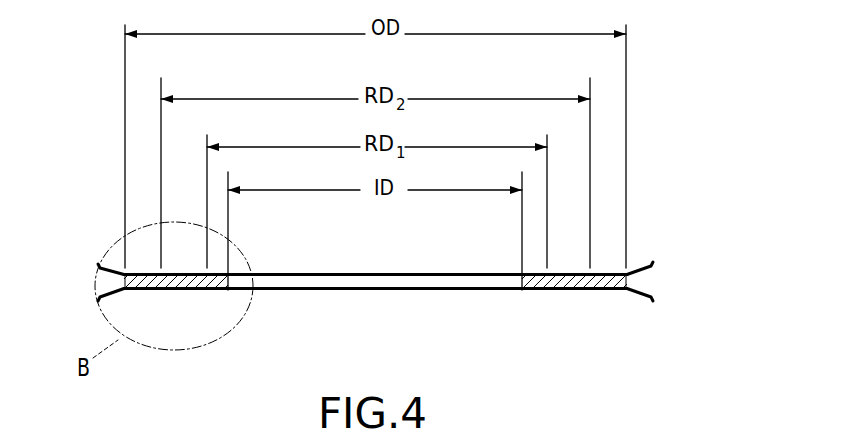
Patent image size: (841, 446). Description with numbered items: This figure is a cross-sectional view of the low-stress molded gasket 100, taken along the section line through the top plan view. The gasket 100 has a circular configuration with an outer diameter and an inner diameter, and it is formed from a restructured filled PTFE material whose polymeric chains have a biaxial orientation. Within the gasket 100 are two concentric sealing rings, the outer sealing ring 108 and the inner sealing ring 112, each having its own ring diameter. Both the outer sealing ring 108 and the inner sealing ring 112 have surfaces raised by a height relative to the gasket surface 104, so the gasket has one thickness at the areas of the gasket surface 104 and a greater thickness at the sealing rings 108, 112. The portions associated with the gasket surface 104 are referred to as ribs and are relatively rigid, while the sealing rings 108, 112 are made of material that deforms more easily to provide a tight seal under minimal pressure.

The gasket 100 is at (417, 266).
The gasket surface 104 is at (375, 283).
The outer sealing ring 108 is at (374, 300).
The inner sealing ring 112 is at (375, 279).